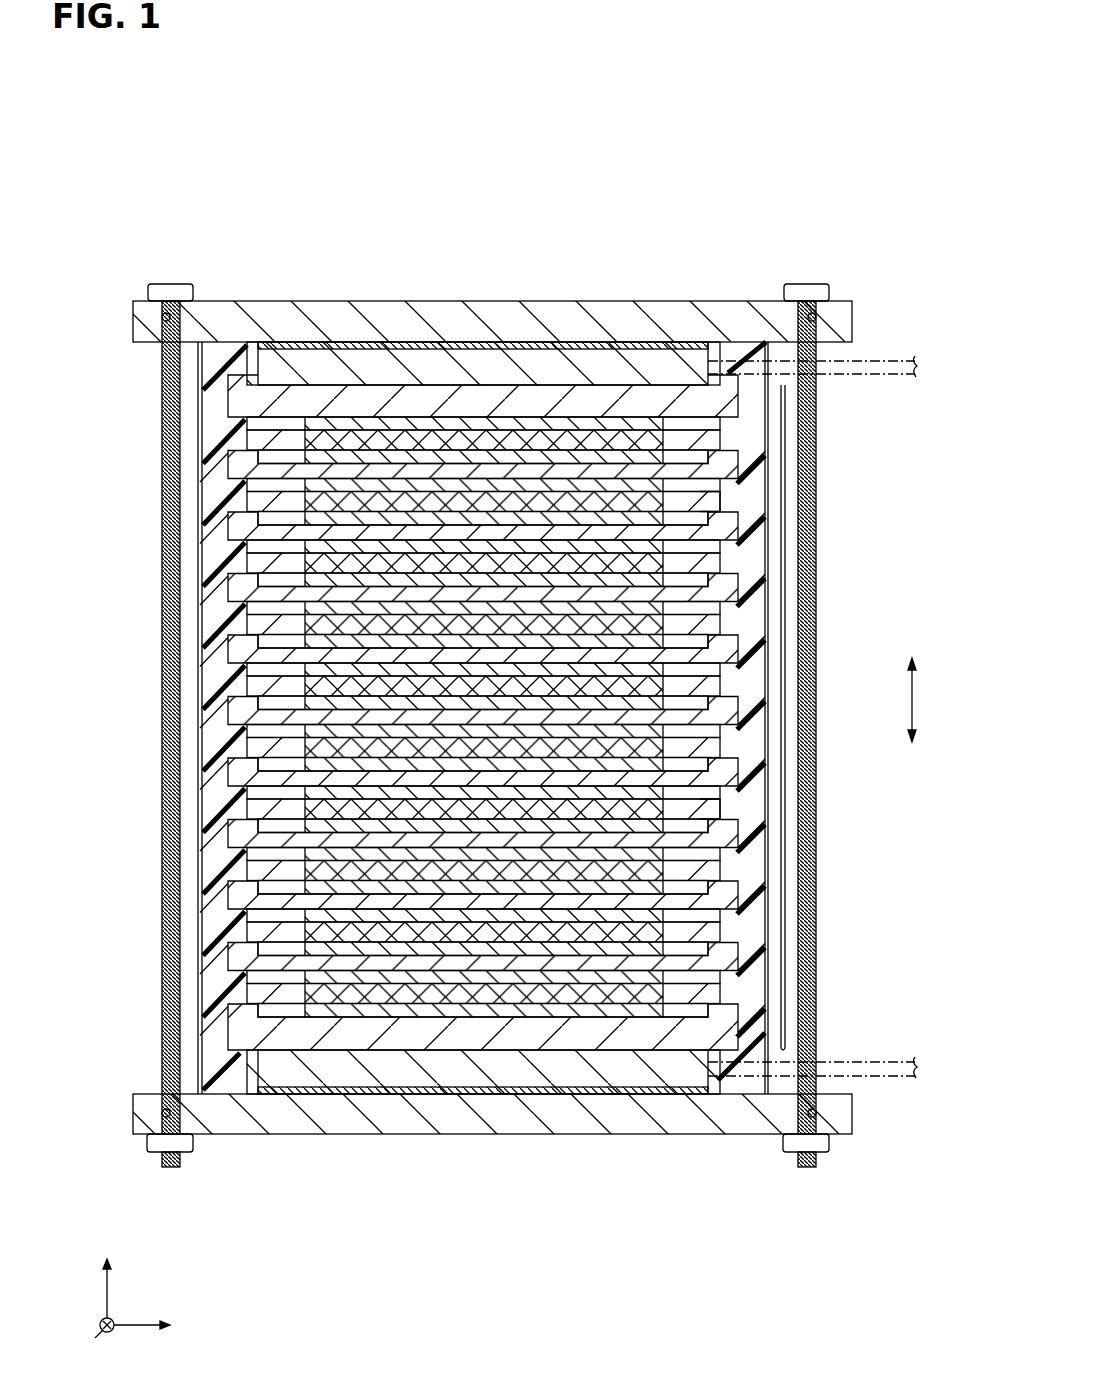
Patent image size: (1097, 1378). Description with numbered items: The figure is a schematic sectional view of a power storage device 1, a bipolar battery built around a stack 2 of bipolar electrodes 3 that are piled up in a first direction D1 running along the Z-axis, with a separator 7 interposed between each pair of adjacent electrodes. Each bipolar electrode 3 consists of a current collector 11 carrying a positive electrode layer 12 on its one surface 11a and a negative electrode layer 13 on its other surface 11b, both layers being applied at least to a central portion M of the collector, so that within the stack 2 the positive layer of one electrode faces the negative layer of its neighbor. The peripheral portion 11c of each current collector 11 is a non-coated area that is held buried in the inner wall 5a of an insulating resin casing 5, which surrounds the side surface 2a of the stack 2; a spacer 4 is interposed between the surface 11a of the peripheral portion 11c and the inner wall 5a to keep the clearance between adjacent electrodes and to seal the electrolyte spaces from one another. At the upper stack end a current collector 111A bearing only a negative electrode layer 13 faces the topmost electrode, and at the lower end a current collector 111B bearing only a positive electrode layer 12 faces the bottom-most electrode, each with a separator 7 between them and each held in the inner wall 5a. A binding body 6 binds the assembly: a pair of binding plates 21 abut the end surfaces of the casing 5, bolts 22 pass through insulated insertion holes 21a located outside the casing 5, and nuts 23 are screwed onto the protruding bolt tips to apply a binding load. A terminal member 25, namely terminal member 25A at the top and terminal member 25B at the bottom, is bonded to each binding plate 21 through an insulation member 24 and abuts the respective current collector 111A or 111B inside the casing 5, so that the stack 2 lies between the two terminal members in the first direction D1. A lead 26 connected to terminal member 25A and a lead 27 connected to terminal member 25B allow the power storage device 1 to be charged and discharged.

The power storage device 1 is at (151, 197).
The stack 2 is at (770, 722).
The side surface 2a is at (230, 645).
The bipolar electrode 3 is at (485, 652).
The spacer 4 is at (740, 515).
The casing 5 is at (194, 384).
The inner wall 5a is at (786, 620).
The binding body 6 is at (489, 724).
The separator 7 is at (252, 470).
The current collector 11 is at (240, 535).
The one surface 11a is at (720, 492).
The other surface 11b is at (705, 543).
The peripheral portion 11c is at (712, 518).
The positive electrode layer 12 is at (248, 502).
The negative electrode layer 13 is at (262, 445).
The binding plate 21 is at (500, 315).
The insertion hole 21a is at (163, 318).
The bolt 22 is at (160, 289).
The nut 23 is at (160, 1150).
The insulation member 24 is at (598, 345).
The terminal member 25 is at (483, 722).
The terminal member 25A is at (375, 360).
The terminal member 25B is at (418, 1070).
The lead 26 is at (875, 366).
The lead 27 is at (857, 1062).
The current collector 111A is at (305, 395).
The current collector 111B is at (352, 1040).
The central portion M is at (515, 525).
The first direction D1 is at (930, 700).